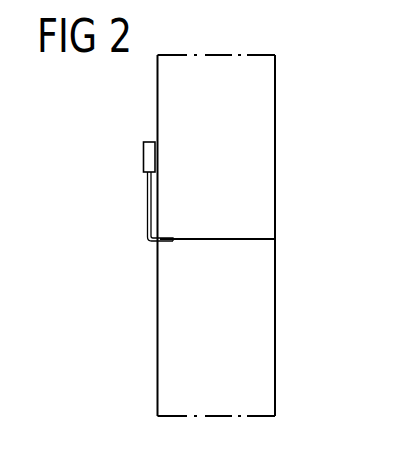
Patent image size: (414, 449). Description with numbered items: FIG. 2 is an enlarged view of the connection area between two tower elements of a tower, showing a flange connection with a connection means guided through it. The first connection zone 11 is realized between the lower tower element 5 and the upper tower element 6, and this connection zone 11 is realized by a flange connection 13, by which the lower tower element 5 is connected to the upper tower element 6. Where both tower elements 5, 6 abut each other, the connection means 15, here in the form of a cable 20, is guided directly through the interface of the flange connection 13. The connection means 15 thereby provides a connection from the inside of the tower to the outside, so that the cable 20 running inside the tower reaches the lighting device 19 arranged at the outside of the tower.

The lower tower element 5 is at (262, 352).
The upper tower element 6 is at (262, 113).
The first connection zone 11 is at (279, 239).
The flange connection 13 is at (190, 250).
The connection means 15 is at (136, 215).
The lighting device 19 is at (144, 160).
The cable 20 is at (148, 190).